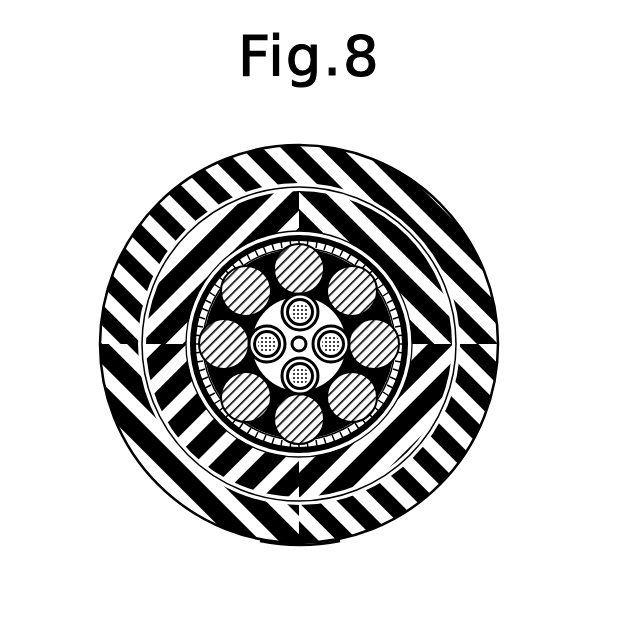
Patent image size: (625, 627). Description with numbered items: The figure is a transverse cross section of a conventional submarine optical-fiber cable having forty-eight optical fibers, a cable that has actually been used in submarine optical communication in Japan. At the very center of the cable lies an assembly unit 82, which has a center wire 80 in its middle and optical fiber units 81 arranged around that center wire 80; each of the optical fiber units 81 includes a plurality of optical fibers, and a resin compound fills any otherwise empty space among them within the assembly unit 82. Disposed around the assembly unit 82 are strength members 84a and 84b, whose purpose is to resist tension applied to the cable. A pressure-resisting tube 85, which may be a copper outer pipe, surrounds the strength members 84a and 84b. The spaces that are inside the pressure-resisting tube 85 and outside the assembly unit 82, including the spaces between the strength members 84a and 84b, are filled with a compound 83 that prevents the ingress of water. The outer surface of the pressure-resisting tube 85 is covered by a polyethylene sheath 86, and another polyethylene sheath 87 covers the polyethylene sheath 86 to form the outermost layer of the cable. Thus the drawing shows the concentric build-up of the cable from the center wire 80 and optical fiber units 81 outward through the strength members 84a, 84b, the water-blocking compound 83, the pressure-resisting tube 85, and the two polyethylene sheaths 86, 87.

The center wire 80 is at (142, 286).
The optical fiber units 81 is at (404, 297).
The assembly unit 82 is at (444, 342).
The compound for preventing the ingress of water 83 is at (403, 381).
The strength member 84a is at (200, 436).
The strength member 84b is at (252, 538).
The pressure-resisting tube 85 is at (410, 430).
The polyethylene sheath 86 is at (428, 452).
The polyethylene sheath 87 is at (404, 490).